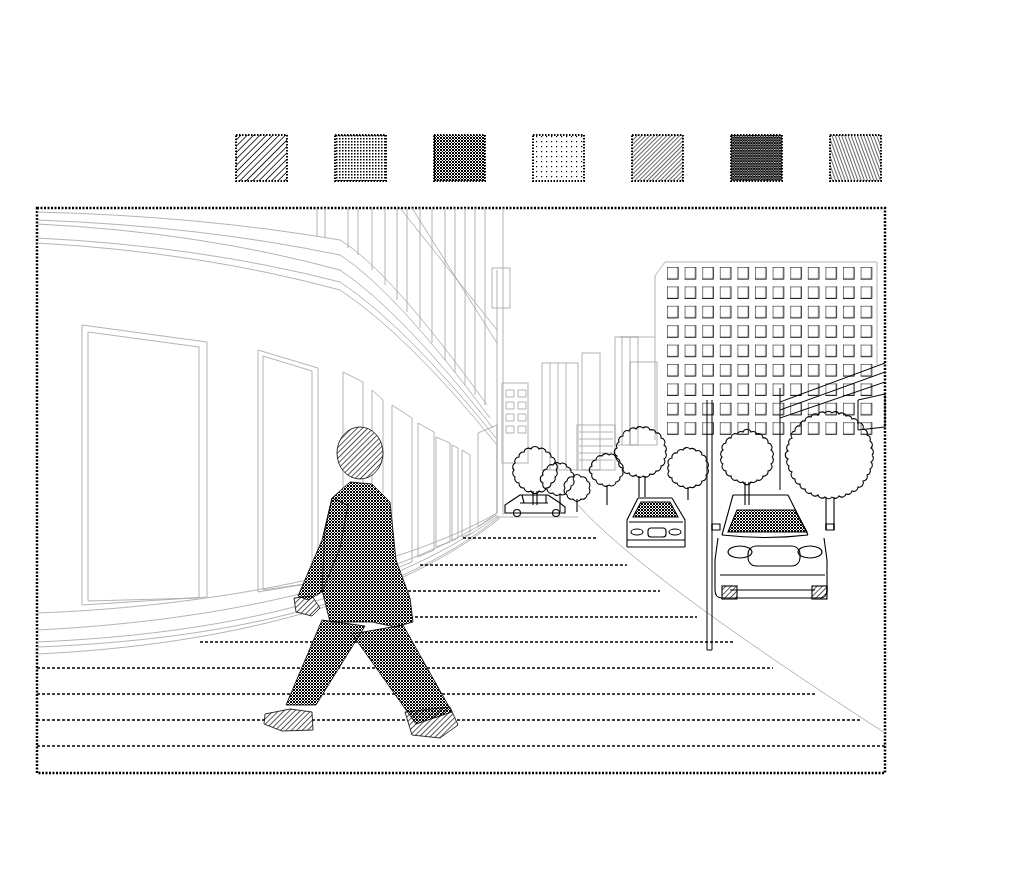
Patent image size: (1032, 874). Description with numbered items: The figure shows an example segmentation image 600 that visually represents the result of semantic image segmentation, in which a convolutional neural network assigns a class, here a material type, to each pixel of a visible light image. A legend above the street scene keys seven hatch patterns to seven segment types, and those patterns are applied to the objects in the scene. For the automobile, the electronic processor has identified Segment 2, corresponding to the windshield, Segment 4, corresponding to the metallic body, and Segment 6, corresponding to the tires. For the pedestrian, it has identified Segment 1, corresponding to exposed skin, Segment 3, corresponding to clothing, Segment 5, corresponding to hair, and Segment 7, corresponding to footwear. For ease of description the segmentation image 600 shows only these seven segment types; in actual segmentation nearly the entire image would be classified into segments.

The segmentation image 600 is at (840, 56).
The Segment 1 is at (262, 131).
The Segment 2 is at (361, 131).
The Segment 3 is at (460, 131).
The Segment 4 is at (559, 131).
The Segment 5 is at (657, 131).
The Segment 6 is at (756, 131).
The Segment 7 is at (855, 131).